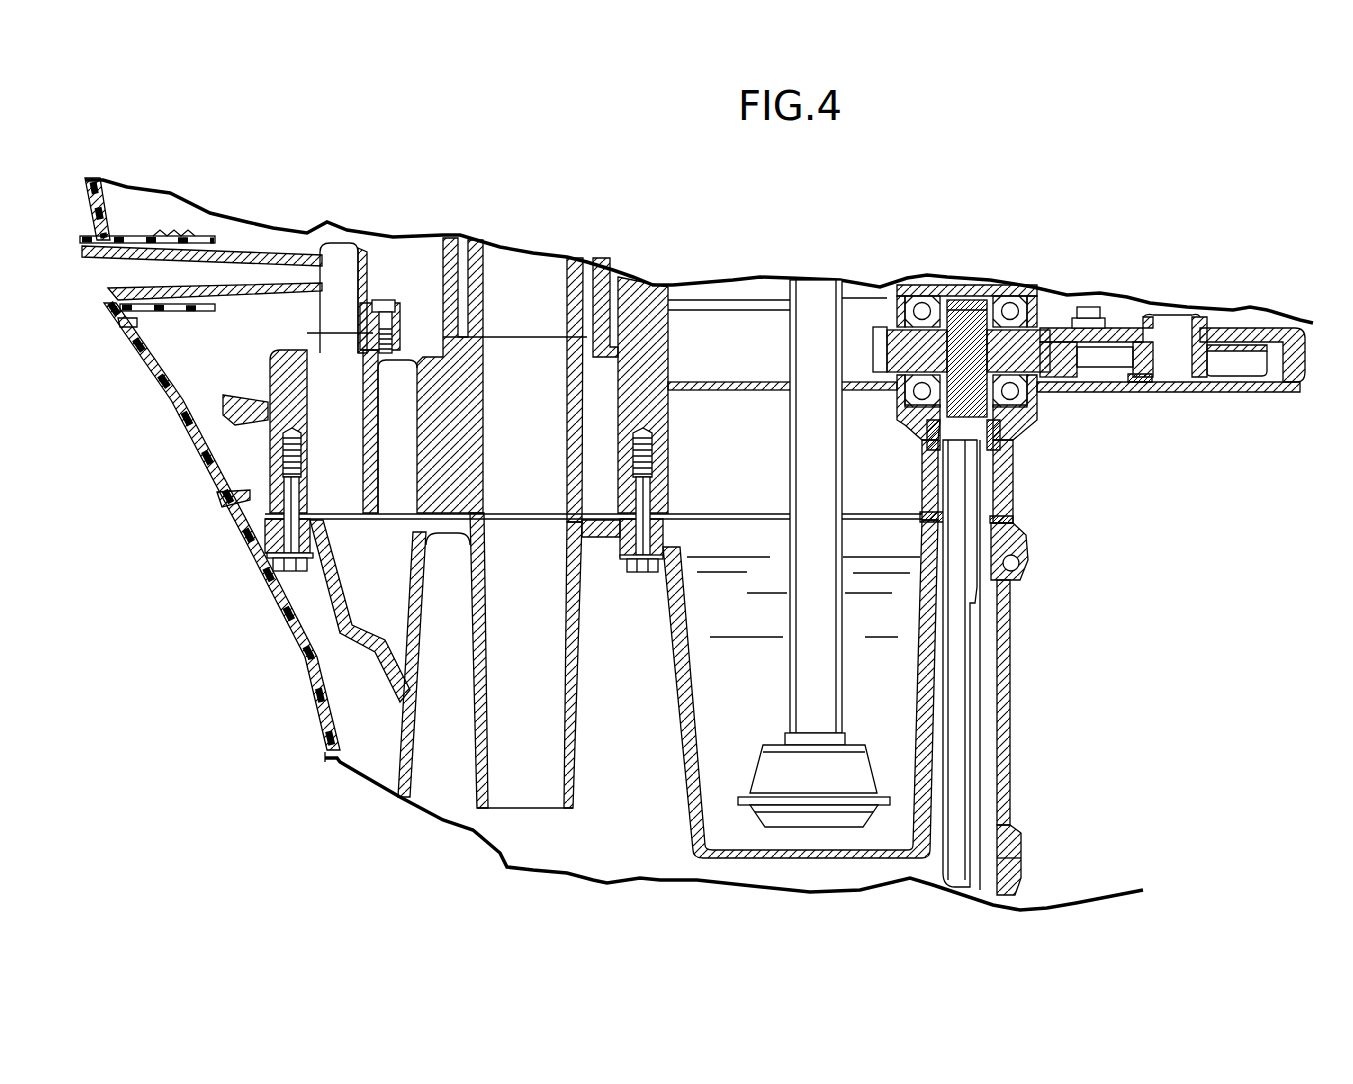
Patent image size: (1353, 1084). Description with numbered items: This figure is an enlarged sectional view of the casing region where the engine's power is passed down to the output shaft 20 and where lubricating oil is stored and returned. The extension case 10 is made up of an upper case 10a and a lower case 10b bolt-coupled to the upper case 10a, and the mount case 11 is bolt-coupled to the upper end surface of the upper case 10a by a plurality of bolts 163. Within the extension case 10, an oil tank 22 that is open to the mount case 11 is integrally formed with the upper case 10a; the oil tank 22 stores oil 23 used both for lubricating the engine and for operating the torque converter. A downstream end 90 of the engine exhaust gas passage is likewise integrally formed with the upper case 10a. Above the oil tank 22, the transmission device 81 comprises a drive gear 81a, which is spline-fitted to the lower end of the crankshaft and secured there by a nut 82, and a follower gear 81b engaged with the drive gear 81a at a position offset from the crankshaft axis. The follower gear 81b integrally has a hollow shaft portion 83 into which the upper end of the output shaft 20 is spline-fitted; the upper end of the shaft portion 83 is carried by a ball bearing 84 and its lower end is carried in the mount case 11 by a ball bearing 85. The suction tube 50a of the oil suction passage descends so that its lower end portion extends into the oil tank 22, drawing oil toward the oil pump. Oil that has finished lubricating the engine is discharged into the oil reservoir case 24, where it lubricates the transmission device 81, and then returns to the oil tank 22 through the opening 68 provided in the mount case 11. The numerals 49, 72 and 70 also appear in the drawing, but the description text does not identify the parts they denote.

The mount case 11 is at (633, 277).
The suction tube 50a is at (805, 333).
The shaft portion 83 is at (943, 300).
The ball bearing 84 is at (897, 308).
The ball bearing 85 is at (897, 400).
The boss 49 is at (1147, 317).
The transmission device 81 is at (1227, 332).
The drive gear 81a is at (1227, 350).
The follower gear 81b is at (1047, 355).
The nut 82 is at (1133, 380).
The oil reservoir case 24 is at (1210, 385).
The opening 68 is at (737, 387).
The oil 23 is at (773, 573).
The gasket 72 is at (920, 533).
The boss 70 is at (1013, 537).
The output shaft 20 is at (963, 727).
The extension case 10 is at (1079, 737).
The upper case 10a is at (1008, 744).
The lower case 10b is at (1052, 856).
The oil tank 22 is at (693, 735).
The downstream end 90 is at (570, 750).
The bolts 163 is at (288, 563).